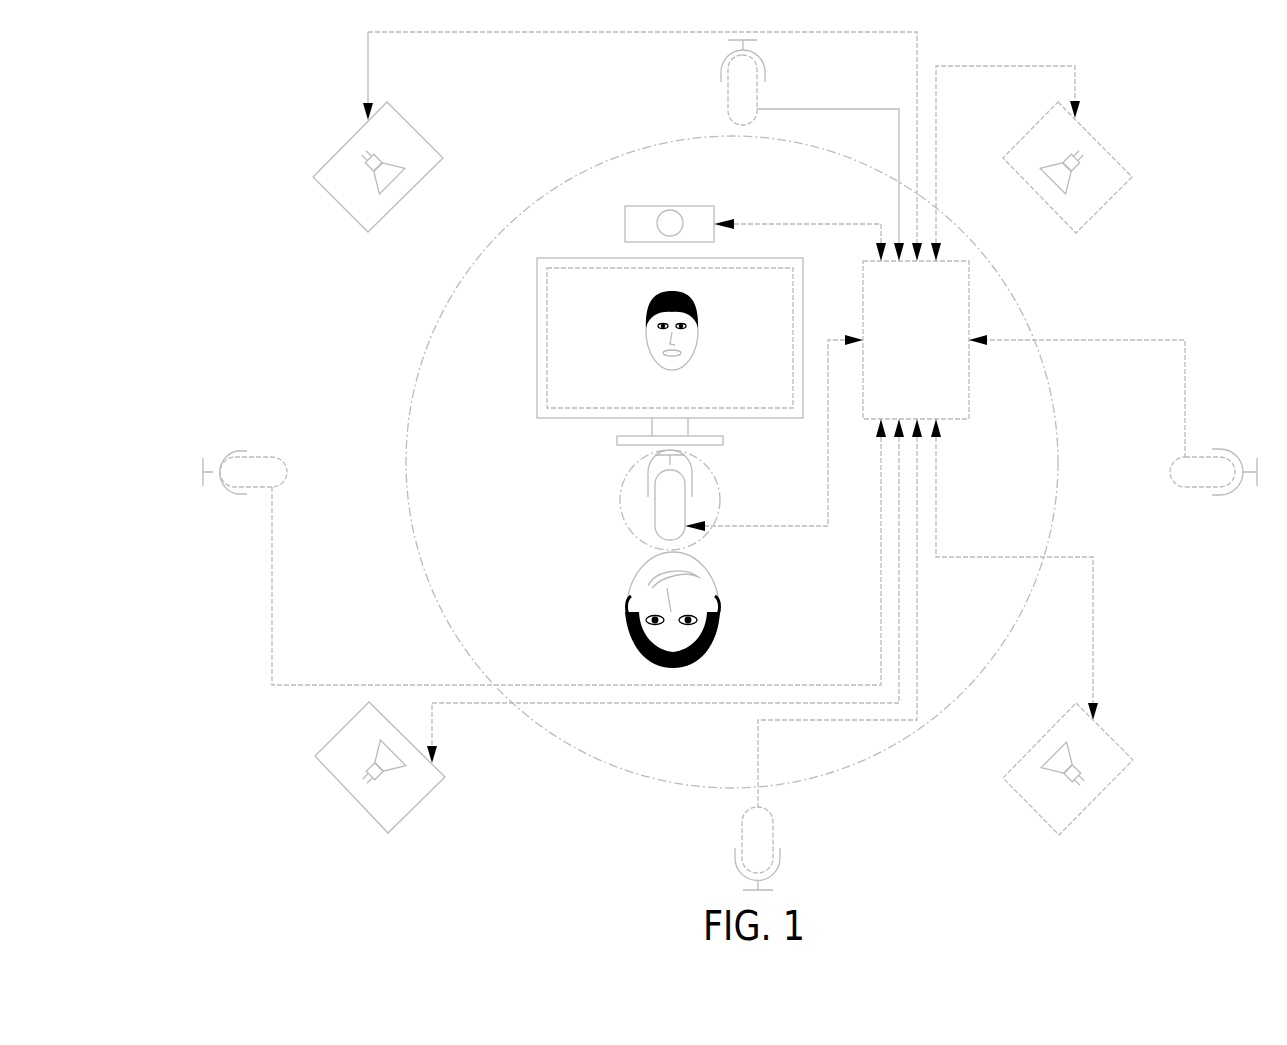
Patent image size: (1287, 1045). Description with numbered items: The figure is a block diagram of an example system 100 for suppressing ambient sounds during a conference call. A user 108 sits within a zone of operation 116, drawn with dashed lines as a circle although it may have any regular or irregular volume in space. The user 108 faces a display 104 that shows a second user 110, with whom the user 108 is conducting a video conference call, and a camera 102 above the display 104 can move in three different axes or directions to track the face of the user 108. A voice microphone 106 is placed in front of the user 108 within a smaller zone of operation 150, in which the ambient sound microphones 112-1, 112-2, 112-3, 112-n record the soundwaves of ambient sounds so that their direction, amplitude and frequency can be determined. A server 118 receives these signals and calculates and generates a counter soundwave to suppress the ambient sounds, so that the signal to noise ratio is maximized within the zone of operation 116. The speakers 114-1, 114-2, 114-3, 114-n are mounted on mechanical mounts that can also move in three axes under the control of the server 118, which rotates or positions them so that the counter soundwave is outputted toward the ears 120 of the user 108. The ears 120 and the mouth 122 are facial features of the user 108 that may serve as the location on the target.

The system 100 is at (133, 76).
The camera 102 is at (625, 222).
The display 104 is at (538, 334).
The voice microphone 106 is at (648, 485).
The user 108 is at (718, 640).
The second user 110 is at (648, 322).
The ambient sound microphone 112-1 is at (721, 70).
The ambient sound microphone 112-2 is at (1203, 487).
The ambient sound microphone 112-3 is at (735, 855).
The ambient sound microphone 112-n is at (250, 456).
The speaker 114-1 is at (1122, 166).
The speaker 114-2 is at (1012, 755).
The speaker 114-3 is at (318, 752).
The speaker 114-n is at (331, 152).
The zone of operation 116 is at (406, 466).
The server 118 is at (934, 352).
The ears 120 is at (628, 604).
The mouth 122 is at (700, 572).
The zone of operation 150 is at (720, 497).